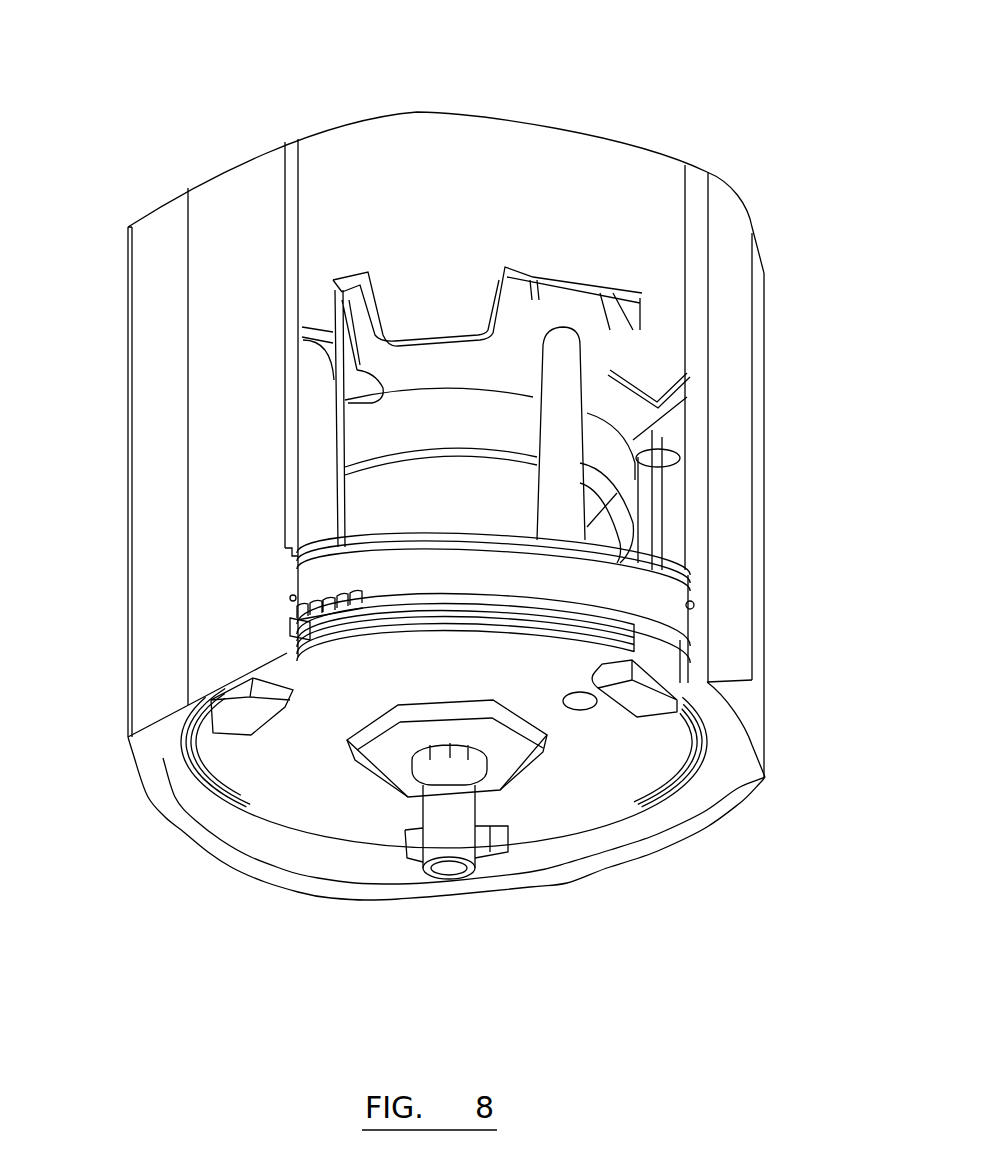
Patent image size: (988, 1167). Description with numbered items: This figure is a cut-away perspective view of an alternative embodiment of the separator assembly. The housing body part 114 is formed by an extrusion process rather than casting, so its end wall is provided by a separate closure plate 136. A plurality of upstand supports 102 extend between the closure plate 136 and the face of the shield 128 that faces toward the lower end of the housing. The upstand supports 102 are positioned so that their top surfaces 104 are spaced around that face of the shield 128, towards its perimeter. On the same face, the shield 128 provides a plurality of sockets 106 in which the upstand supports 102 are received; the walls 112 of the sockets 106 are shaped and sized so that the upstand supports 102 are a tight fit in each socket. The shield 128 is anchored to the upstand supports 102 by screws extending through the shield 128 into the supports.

The upstand supports 102 is at (563, 445).
The top surfaces 104 is at (562, 330).
The sockets 106 is at (577, 303).
The walls 112 is at (385, 390).
The housing body part 114 is at (290, 240).
The shield 128 is at (505, 293).
The closure plate 136 is at (306, 788).